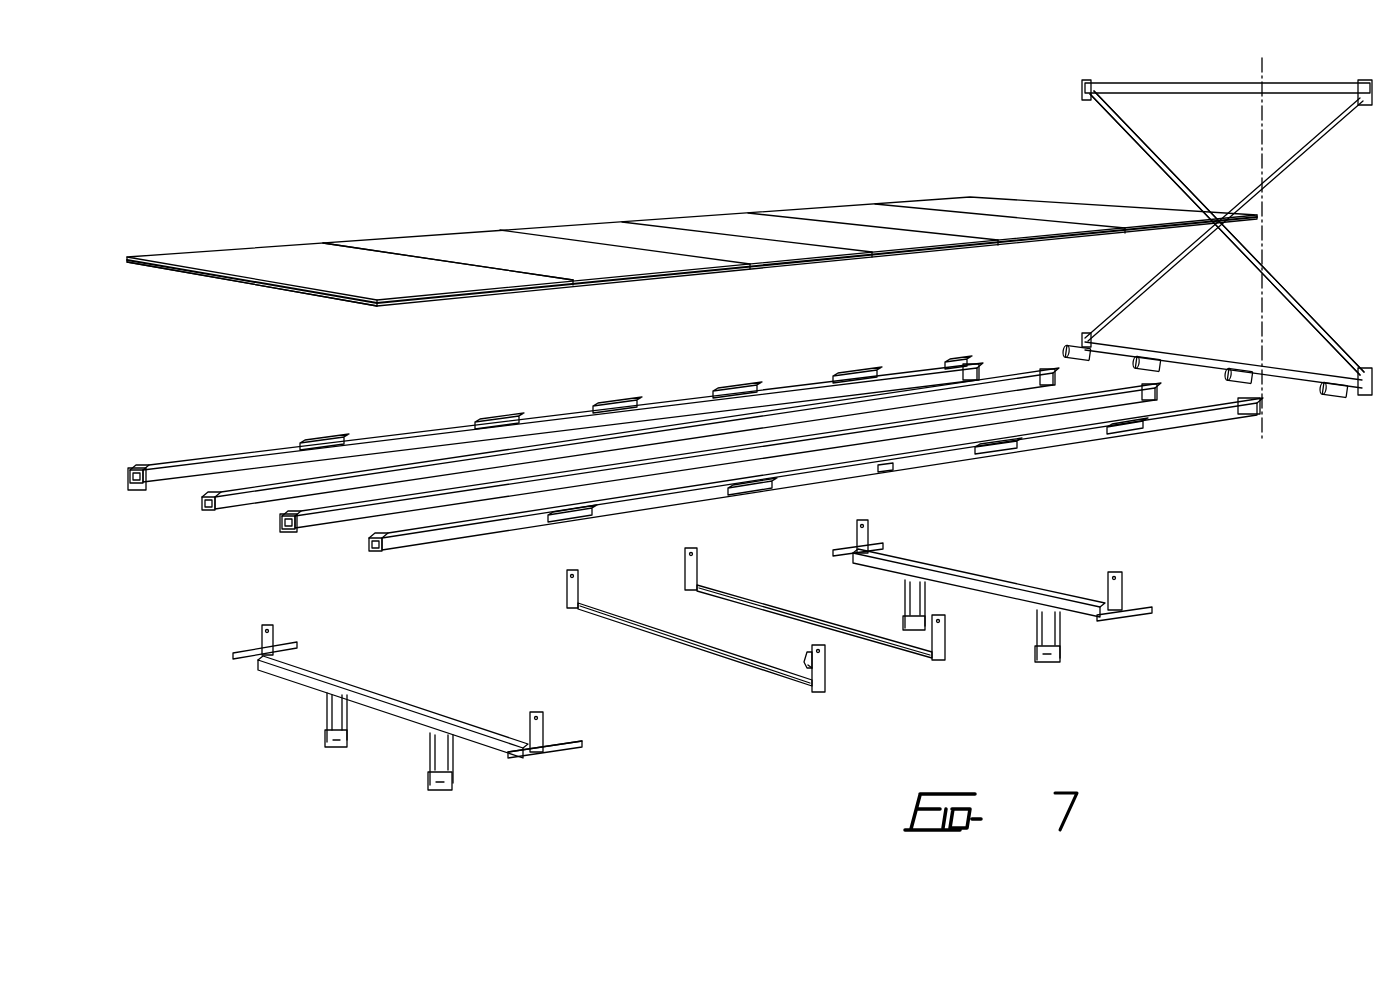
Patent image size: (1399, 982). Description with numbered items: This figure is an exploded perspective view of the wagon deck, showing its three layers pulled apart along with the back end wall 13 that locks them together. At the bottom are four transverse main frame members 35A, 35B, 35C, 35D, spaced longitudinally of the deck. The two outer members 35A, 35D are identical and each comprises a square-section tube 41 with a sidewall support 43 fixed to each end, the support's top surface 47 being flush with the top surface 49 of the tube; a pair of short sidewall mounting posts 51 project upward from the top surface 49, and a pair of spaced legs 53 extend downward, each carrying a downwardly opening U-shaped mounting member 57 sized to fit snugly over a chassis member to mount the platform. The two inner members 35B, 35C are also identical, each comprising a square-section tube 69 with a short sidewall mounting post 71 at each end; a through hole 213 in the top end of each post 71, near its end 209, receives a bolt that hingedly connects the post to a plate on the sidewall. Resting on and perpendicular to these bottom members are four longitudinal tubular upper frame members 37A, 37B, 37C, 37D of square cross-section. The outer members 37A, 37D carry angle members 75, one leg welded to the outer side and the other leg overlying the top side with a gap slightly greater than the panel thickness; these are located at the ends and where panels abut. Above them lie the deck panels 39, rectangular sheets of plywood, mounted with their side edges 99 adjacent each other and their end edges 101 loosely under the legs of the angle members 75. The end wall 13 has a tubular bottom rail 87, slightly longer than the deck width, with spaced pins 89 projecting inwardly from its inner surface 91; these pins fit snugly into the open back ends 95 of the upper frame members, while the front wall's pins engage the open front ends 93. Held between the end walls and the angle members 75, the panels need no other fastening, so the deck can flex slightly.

The end wall 13 is at (1336, 78).
The deck panels 39 is at (268, 236).
The side edges 99 is at (262, 289).
The end edges 101 is at (178, 254).
The bottom rail 87 is at (1205, 362).
The pins 89 is at (1150, 358).
The inner surface 91 is at (1300, 378).
The upper frame member 37A is at (433, 552).
The upper frame member 37B is at (286, 530).
The upper frame member 37C is at (212, 509).
The upper frame member 37D is at (130, 480).
The open front ends 93 is at (150, 490).
The open back ends 95 is at (978, 368).
The angle members 75 is at (618, 394).
The main frame member 35A is at (417, 716).
The main frame member 35B is at (697, 648).
The main frame member 35C is at (683, 566).
The main frame member 35D is at (935, 560).
The tube 41 is at (278, 681).
The sidewall support 43 is at (540, 765).
The top surface 47 is at (582, 745).
The top surface 49 is at (468, 720).
The sidewall mounting posts 51 is at (262, 633).
The legs 53 is at (320, 716).
The U-shaped mounting member 57 is at (322, 750).
The tube 69 is at (735, 672).
The sidewall mounting post 71 is at (565, 588).
The end 209 is at (826, 655).
The through hole 213 is at (810, 672).